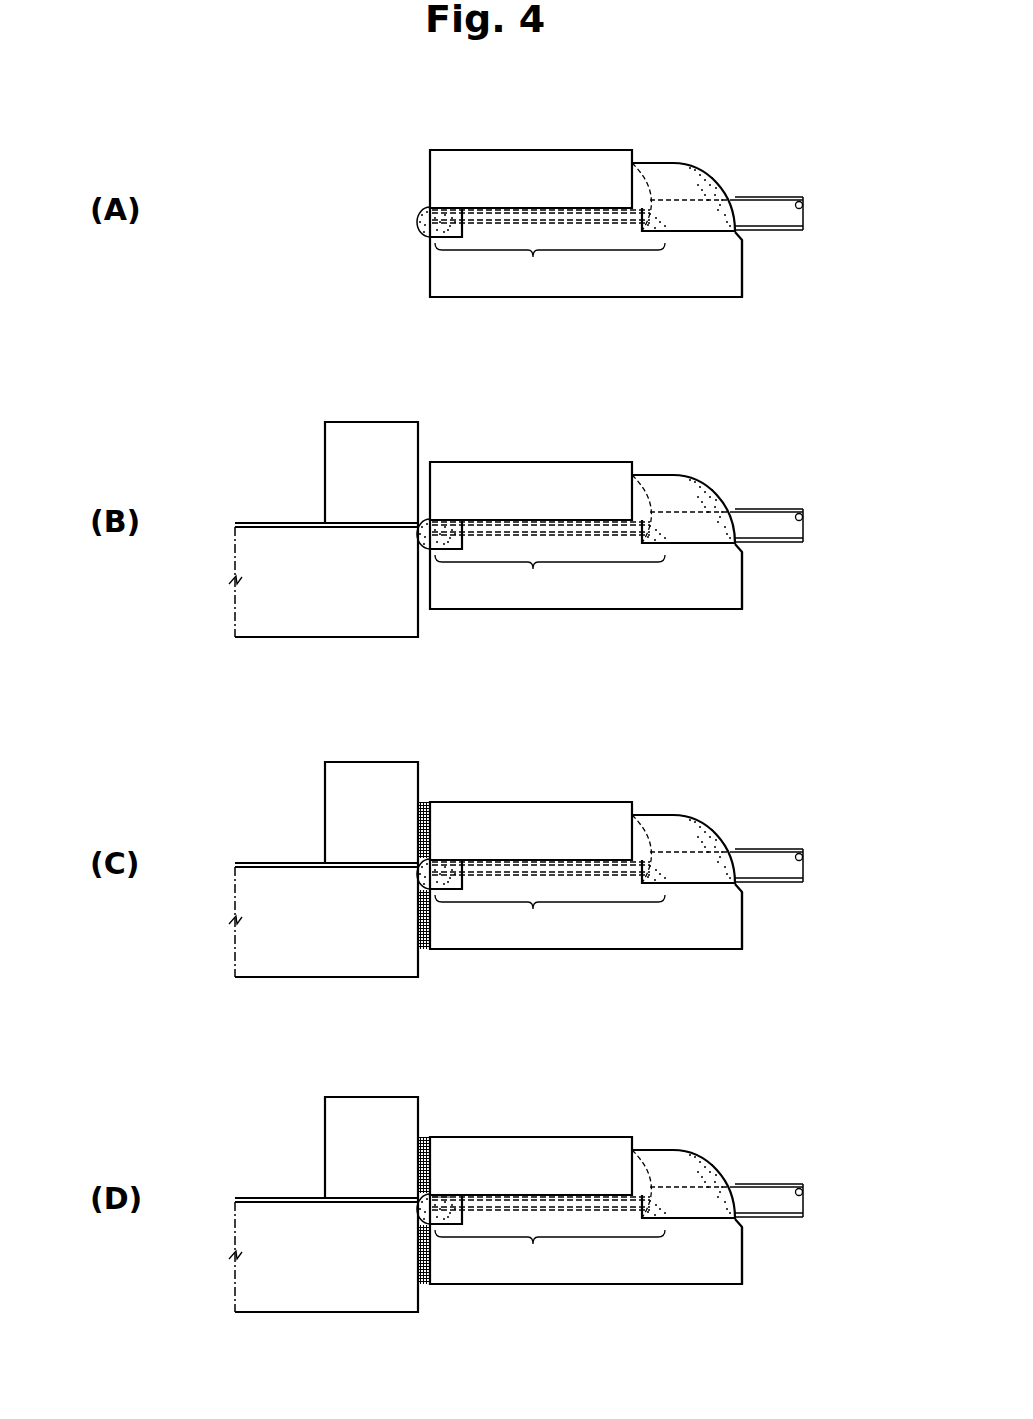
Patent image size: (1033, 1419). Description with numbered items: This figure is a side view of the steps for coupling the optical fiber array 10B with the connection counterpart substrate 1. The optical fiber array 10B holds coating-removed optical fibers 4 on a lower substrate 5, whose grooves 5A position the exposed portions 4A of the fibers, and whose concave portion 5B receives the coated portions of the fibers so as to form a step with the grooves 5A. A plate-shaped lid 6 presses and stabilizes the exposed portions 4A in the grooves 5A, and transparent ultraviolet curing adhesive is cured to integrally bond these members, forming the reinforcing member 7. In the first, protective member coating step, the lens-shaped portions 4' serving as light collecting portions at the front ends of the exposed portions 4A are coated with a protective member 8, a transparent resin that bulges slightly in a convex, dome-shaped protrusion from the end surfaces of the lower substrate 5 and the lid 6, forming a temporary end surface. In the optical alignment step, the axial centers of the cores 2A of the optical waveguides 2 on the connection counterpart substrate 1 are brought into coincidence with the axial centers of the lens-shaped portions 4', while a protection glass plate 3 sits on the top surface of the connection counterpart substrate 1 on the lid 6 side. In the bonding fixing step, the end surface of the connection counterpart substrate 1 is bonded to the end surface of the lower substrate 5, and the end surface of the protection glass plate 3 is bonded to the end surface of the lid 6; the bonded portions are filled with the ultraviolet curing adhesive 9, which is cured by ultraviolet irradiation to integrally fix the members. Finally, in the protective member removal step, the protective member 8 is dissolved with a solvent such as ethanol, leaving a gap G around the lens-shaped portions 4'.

The connection counterpart substrate 1 is at (304, 918).
The optical waveguide 2 is at (304, 850).
The core 2A is at (371, 790).
The protection glass plate 3 is at (344, 810).
The optical fiber 4 is at (617, 673).
The lens-shaped portion 4' is at (446, 763).
The exposed portion 4A is at (550, 763).
The lower substrate 5 is at (613, 746).
The groove 5A is at (644, 658).
The concave portion 5B is at (688, 775).
The lid 6 is at (531, 641).
The reinforcing member 7 is at (680, 1170).
The protective member 8 is at (408, 706).
The adhesive layer 9 is at (426, 996).
The optical fiber array 10B is at (768, 666).
The gap G is at (445, 1215).